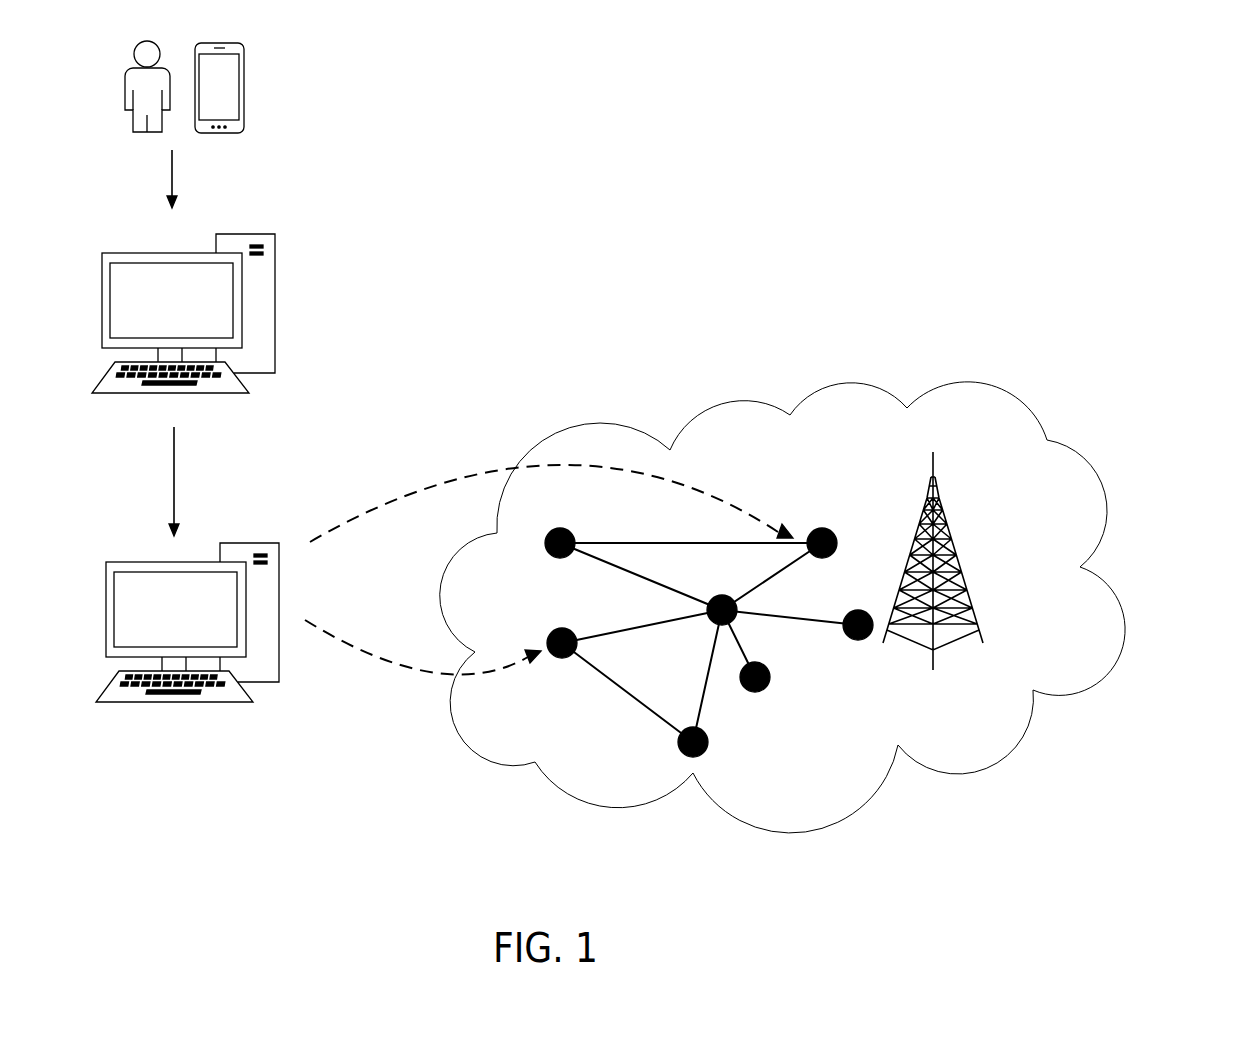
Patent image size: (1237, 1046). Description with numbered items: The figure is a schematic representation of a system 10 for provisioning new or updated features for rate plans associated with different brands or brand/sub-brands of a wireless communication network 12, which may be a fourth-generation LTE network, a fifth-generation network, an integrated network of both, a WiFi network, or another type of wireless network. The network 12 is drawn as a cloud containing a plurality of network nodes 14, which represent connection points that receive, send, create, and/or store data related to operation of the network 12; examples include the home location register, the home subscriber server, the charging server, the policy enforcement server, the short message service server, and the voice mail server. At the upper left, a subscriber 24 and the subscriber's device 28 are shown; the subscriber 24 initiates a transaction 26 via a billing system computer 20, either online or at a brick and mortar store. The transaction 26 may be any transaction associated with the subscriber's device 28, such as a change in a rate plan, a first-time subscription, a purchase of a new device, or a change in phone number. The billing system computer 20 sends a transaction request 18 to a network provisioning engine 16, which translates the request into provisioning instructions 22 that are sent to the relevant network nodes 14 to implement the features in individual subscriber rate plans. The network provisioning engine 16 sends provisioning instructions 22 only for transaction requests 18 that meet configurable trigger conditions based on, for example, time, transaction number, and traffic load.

The system 10 is at (617, 137).
The wireless communication network 12 is at (782, 591).
The network nodes 14 is at (566, 529).
The network provisioning engine 16 is at (119, 562).
The transaction request 18 is at (174, 470).
The billing system computer 20 is at (128, 253).
The provisioning instructions 22 is at (427, 479).
The subscriber 24 is at (129, 69).
The transaction 26 is at (173, 170).
The subscriber's device 28 is at (245, 68).